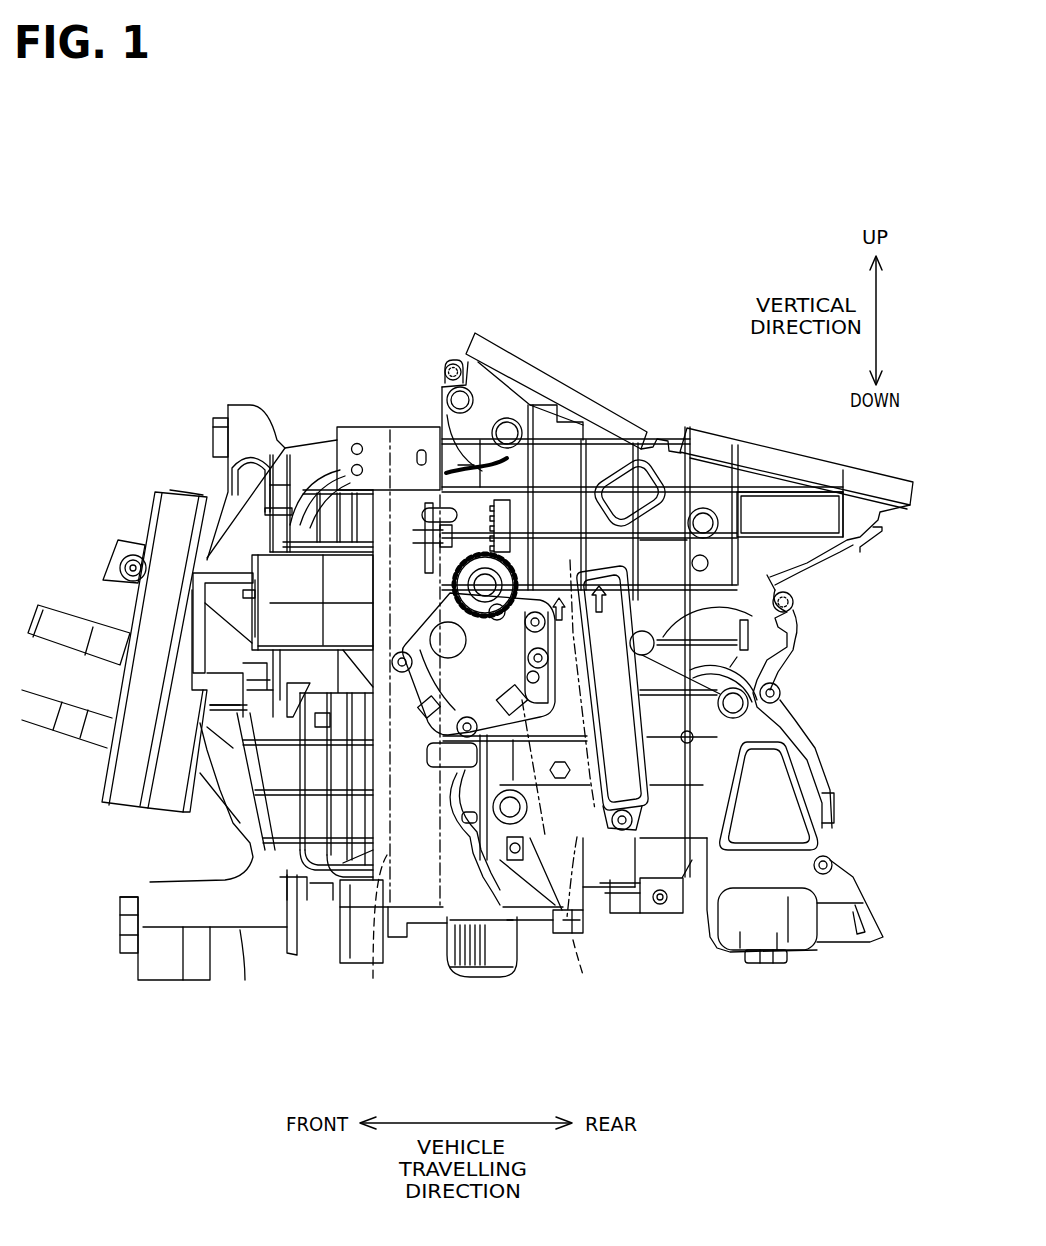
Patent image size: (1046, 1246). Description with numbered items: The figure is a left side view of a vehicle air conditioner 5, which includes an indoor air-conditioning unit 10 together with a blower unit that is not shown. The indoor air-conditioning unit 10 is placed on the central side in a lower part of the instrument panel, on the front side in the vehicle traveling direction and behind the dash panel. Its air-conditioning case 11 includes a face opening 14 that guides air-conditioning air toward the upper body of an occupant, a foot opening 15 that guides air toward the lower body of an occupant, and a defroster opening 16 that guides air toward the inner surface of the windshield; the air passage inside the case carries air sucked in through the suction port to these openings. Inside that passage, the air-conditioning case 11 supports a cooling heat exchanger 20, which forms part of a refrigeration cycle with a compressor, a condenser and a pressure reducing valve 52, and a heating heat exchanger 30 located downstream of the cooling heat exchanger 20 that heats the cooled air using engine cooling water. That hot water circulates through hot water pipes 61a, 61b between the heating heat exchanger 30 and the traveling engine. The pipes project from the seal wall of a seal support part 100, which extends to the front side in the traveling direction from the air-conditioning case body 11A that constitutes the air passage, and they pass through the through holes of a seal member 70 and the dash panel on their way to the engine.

The vehicle air conditioner 5 is at (188, 1058).
The indoor air-conditioning unit 10 is at (240, 940).
The air-conditioning case 11 is at (812, 780).
The air-conditioning case body 11A is at (292, 575).
The face opening 14 is at (774, 447).
The foot opening 15 is at (778, 950).
The defroster opening 16 is at (594, 390).
The cooling heat exchanger 20 is at (386, 950).
The heating heat exchanger 30 is at (575, 950).
The pressure reducing valve 52 is at (105, 550).
The hot water pipe 61a is at (57, 605).
The hot water pipe 61b is at (34, 730).
The seal member 70 is at (113, 812).
The seal support part 100 is at (158, 815).